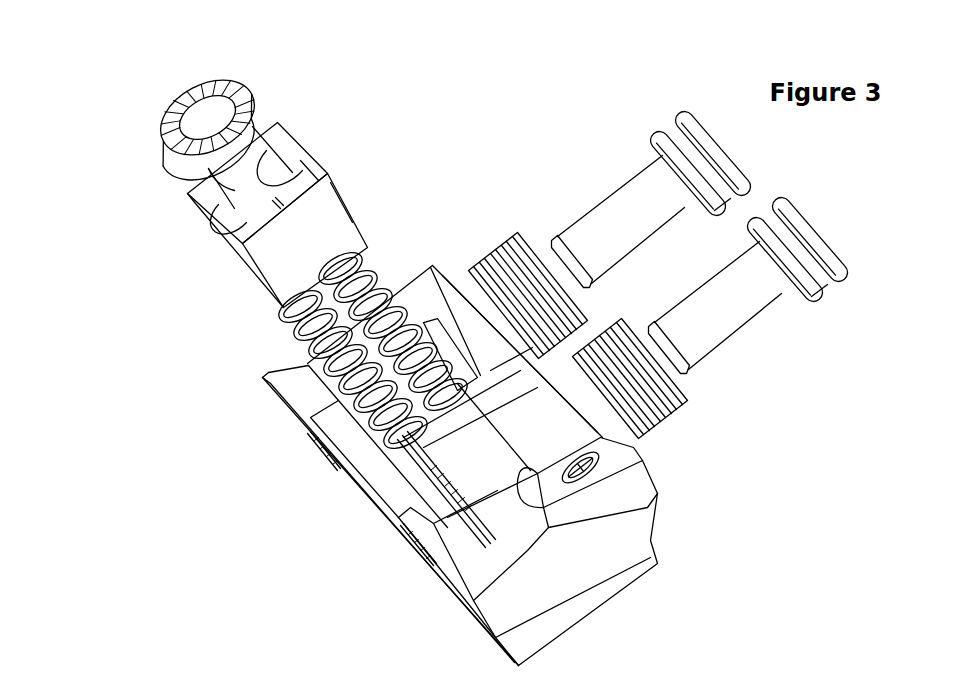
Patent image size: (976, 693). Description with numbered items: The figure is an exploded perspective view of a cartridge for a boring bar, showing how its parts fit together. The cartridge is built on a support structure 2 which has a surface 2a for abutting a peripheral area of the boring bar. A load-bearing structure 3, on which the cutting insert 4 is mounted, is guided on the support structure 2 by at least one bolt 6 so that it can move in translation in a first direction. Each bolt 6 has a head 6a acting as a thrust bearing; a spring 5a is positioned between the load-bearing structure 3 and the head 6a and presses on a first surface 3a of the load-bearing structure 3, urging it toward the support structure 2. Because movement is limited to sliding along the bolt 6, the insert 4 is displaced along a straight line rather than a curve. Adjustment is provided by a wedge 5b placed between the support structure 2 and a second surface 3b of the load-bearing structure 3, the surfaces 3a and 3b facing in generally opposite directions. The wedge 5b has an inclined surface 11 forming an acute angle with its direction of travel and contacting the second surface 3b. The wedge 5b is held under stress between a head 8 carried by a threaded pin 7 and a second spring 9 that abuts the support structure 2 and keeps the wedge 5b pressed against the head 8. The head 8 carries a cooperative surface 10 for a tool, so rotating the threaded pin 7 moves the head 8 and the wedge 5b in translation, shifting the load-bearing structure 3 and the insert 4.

The support structure 2 is at (332, 430).
The surface for abutting a peripheral area of a boring bar 2a is at (363, 502).
The load-bearing structure 3 is at (633, 528).
The first surface of the load-bearing structure 3a is at (552, 384).
The second surface of the load-bearing structure 3b is at (455, 358).
The cutting insert 4 is at (613, 480).
The spring 5a is at (509, 244).
The wedge 5b is at (307, 170).
The bolt 6 is at (617, 200).
The head 6a is at (675, 133).
The threaded pin 7 is at (236, 182).
The head 8 is at (248, 120).
The spring 9 is at (292, 330).
The cooperative surface 10 is at (200, 115).
The surface 11 is at (345, 188).